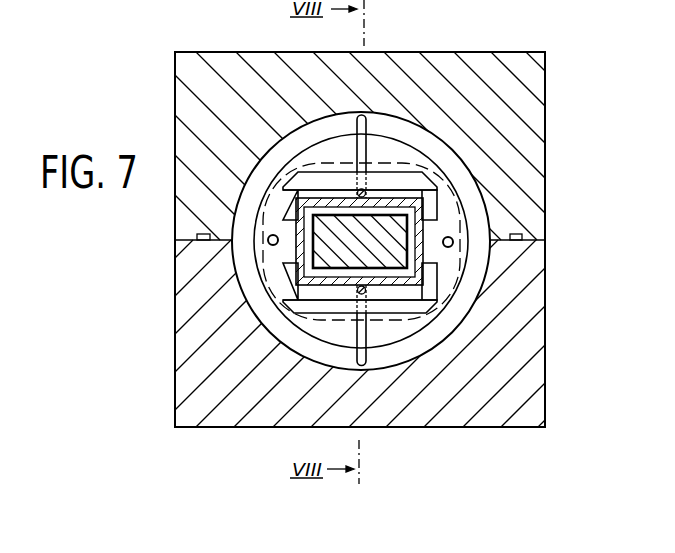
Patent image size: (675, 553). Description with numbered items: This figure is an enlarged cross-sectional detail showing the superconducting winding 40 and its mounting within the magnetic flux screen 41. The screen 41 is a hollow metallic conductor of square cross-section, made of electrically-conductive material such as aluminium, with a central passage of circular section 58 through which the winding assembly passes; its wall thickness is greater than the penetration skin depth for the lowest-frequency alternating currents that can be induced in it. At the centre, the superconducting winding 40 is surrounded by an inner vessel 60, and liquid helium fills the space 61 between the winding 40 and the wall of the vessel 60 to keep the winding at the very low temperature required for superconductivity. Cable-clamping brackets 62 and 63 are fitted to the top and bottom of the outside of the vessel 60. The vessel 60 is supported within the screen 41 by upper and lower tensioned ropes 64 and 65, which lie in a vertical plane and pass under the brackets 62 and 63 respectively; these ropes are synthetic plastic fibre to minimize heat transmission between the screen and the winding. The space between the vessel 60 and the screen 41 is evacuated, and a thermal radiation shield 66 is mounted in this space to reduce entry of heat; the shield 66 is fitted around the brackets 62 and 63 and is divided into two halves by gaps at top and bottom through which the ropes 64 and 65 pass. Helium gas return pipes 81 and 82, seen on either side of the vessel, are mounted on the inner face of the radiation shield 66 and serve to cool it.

The superconducting winding 40 is at (398, 257).
The screen 41 is at (526, 115).
The outer cylindrical bore 58 is at (258, 308).
The inner vessel 60 is at (437, 191).
The space 61 is at (412, 229).
The cable-clamping bracket 62 is at (400, 178).
The cable-clamping bracket 63 is at (409, 304).
The upper tensioned rope 64 is at (366, 118).
The lower tensioned rope 65 is at (367, 354).
The thermal radiation shield 66 is at (265, 272).
The return pipe 81 is at (272, 235).
The return pipe 82 is at (454, 240).